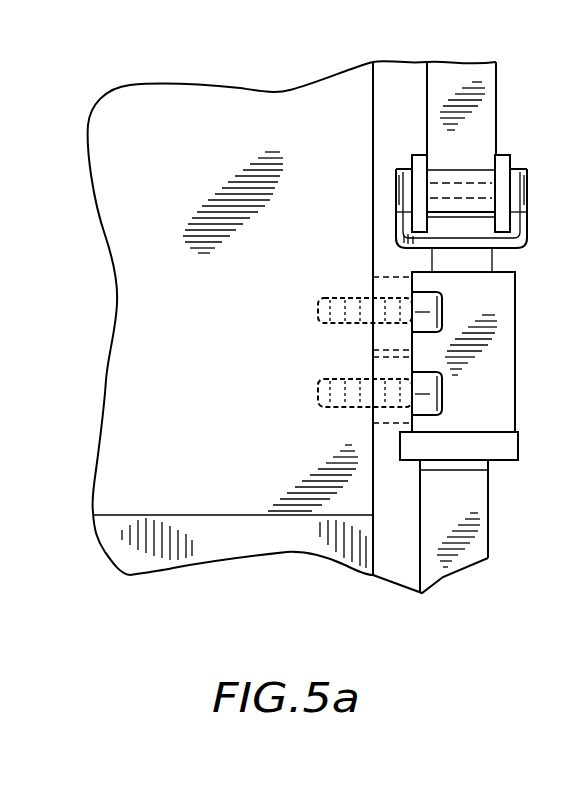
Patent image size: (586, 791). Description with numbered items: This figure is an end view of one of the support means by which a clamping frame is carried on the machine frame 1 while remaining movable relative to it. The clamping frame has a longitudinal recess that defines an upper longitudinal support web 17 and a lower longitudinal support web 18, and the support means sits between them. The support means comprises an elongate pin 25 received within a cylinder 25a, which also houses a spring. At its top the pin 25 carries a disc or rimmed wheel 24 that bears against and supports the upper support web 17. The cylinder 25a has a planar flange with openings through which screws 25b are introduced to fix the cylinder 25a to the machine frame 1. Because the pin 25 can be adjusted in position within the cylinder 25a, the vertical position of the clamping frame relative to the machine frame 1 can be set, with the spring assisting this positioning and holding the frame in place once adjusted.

The machine frame 1 is at (222, 123).
The upper longitudinal support web 17 is at (480, 119).
The lower longitudinal support web 18 is at (472, 500).
The disc or rimmed wheel 24 is at (443, 193).
The elongate pin 25 is at (409, 353).
The cylinder 25a is at (482, 392).
The screws 25b is at (328, 327).